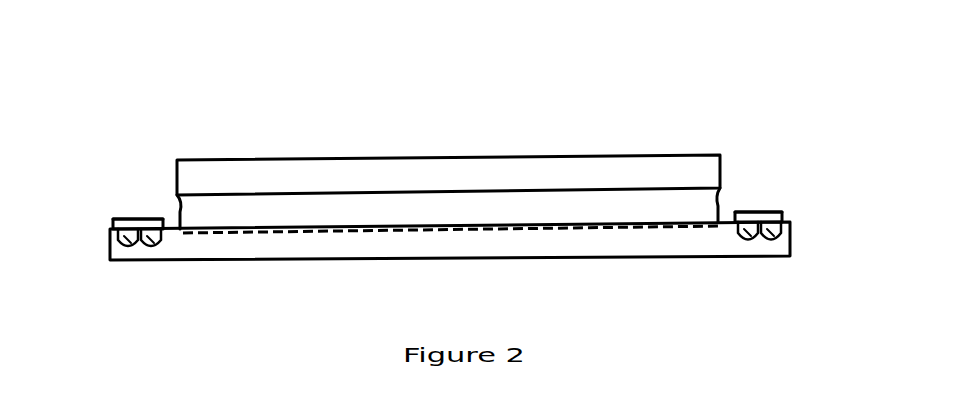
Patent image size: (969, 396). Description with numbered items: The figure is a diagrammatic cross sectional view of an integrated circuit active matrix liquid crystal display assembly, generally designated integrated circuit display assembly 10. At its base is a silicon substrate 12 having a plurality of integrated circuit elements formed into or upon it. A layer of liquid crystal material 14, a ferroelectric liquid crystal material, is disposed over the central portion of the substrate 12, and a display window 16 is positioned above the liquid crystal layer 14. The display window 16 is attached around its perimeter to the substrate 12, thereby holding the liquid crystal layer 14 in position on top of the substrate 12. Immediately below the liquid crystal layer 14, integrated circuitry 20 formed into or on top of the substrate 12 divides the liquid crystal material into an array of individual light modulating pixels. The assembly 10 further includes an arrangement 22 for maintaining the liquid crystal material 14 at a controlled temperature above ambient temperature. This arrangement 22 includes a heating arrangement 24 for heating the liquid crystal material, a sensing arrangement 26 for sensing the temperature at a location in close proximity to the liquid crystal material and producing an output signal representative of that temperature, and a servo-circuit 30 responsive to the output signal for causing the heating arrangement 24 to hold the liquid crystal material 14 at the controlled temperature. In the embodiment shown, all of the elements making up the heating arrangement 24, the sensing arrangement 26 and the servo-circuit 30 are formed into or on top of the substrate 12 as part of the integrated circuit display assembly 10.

The integrated circuit display assembly 10 is at (556, 137).
The silicon substrate 12 is at (292, 247).
The layer of liquid crystal material 14 is at (348, 204).
The display window 16 is at (290, 173).
The integrated circuitry 20 is at (388, 237).
The arrangement for maintaining the liquid crystal material at a controlled temperat 22 is at (131, 211).
The heating arrangement 24 is at (138, 220).
The sensing arrangement 26 is at (114, 250).
The servo-circuit 30 is at (152, 250).